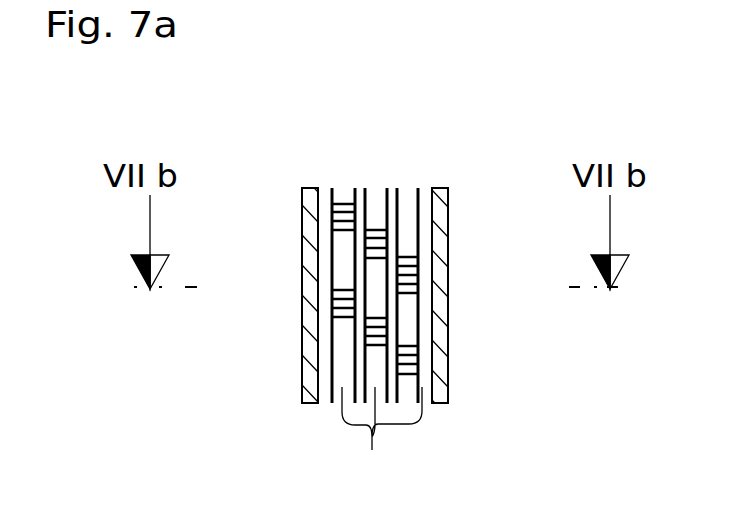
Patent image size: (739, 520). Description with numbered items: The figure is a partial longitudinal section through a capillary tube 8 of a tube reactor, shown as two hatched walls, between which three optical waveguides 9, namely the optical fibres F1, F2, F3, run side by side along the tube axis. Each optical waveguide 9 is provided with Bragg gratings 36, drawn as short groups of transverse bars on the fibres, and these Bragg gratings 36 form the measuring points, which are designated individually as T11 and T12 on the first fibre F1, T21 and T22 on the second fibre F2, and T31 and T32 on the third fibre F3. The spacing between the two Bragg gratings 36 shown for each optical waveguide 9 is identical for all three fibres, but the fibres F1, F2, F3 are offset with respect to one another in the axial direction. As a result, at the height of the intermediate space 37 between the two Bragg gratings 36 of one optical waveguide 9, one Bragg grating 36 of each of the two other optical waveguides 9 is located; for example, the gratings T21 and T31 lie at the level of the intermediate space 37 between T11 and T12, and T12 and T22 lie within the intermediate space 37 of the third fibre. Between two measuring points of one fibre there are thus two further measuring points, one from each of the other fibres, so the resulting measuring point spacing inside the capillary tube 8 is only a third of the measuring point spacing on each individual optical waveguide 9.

The capillary tube 8 is at (450, 206).
The optical waveguide 9 is at (382, 433).
The Bragg grating 36 is at (345, 312).
The intermediate space 37 is at (409, 264).
The optical fibre F1 is at (296, 264).
The optical fibre F2 is at (446, 264).
The optical fibre F3 is at (462, 264).
The measuring point T11 is at (338, 207).
The measuring point T12 is at (342, 294).
The measuring point T21 is at (377, 247).
The measuring point T22 is at (377, 330).
The measuring point T31 is at (405, 276).
The measuring point T32 is at (408, 362).